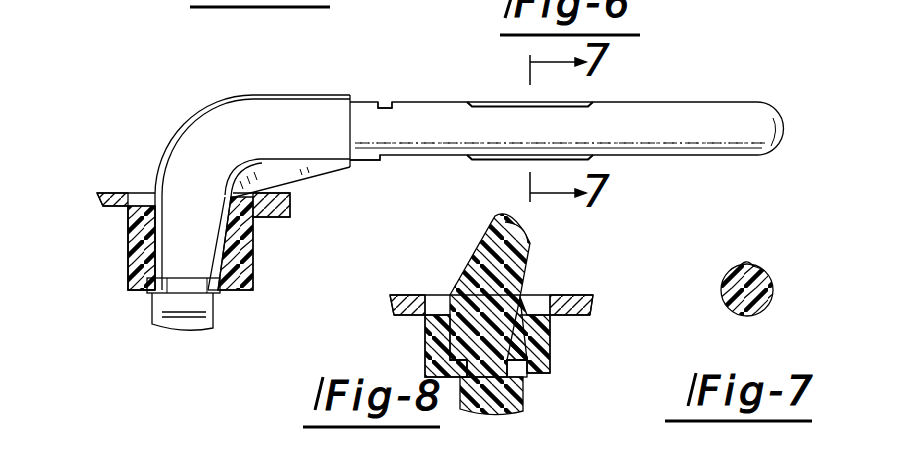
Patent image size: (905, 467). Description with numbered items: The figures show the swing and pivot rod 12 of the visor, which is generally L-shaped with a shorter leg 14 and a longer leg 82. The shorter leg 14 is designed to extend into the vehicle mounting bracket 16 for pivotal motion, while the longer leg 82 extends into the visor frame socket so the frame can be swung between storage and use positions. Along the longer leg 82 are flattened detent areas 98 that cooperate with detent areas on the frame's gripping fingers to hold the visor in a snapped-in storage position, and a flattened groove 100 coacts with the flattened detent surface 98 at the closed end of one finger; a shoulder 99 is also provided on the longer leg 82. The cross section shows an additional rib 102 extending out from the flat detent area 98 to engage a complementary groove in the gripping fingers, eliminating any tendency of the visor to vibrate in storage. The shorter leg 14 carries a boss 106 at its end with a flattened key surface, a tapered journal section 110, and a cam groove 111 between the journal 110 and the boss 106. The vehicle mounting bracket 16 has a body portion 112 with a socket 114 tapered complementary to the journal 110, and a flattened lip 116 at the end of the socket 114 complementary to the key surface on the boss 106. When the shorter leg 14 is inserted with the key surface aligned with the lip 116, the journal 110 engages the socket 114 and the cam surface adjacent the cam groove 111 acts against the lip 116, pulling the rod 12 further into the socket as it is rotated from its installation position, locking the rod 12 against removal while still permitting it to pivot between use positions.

In FIG. 6, the swing and pivot rod 12 is at (264, 84).
In FIG. 6, the shorter leg 14 is at (154, 172).
In FIG. 6, the vehicle mounting bracket 16 is at (118, 291).
In FIG. 8, the vehicle mounting bracket 16 is at (581, 282).
In FIG. 6, the longer leg 82 is at (778, 98).
In FIG. 7, the longer leg 82 is at (774, 300).
In FIG. 6, the flattened detent areas 98 is at (576, 102).
In FIG. 7, the flattened detent areas 98 is at (764, 270).
In FIG. 6, the shoulder 99 is at (358, 98).
In FIG. 6, the flattened groove 100 is at (386, 105).
In FIG. 6, the rib 102 is at (597, 102).
In FIG. 7, the rib 102 is at (748, 262).
In FIG. 6, the boss 106 is at (214, 316).
In FIG. 6, the tapered journal section 110 is at (172, 230).
In FIG. 8, the tapered journal section 110 is at (482, 336).
In FIG. 8, the cam groove 111 is at (552, 370).
In FIG. 6, the body portion 112 is at (254, 286).
In FIG. 8, the body portion 112 is at (551, 345).
In FIG. 6, the socket 114 is at (214, 236).
In FIG. 8, the socket 114 is at (521, 298).
In FIG. 8, the flattened lip 116 is at (524, 395).